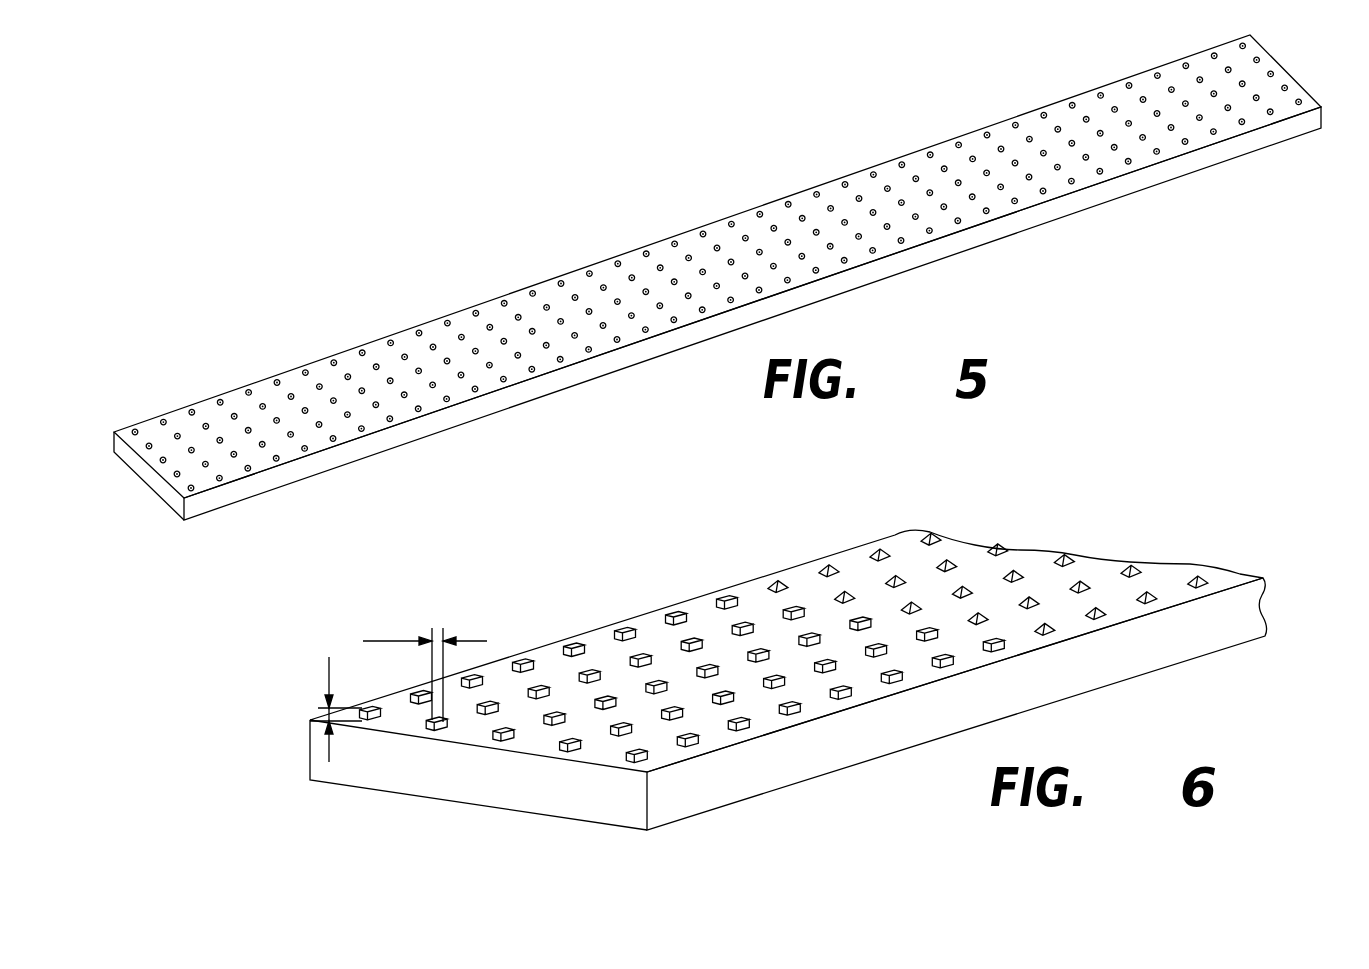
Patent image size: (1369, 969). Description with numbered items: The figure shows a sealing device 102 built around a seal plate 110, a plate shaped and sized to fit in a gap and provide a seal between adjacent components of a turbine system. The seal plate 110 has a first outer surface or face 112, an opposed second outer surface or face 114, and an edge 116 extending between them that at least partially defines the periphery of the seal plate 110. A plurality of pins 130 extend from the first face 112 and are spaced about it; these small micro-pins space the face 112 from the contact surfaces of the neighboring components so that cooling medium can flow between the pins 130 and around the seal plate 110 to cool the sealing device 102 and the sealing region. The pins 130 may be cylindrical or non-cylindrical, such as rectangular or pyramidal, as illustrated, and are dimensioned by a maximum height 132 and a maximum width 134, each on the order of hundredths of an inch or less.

In FIG. 5, the sealing device 102 is at (540, 232).
In FIG. 6, the sealing device 102 is at (281, 752).
In FIG. 5, the seal plate 110 is at (433, 322).
In FIG. 5, the first outer surface or face 112 is at (320, 365).
In FIG. 6, the first outer surface or face 112 is at (812, 707).
In FIG. 5, the second outer surface or face 114 is at (283, 488).
In FIG. 6, the second outer surface or face 114 is at (732, 807).
In FIG. 5, the edge 116 is at (395, 438).
In FIG. 6, the edge 116 is at (765, 763).
In FIG. 5, the pins 130 is at (718, 286).
In FIG. 6, the pins 130 is at (880, 550).
In FIG. 6, the maximum height 132 is at (325, 672).
In FIG. 6, the maximum width 134 is at (372, 633).